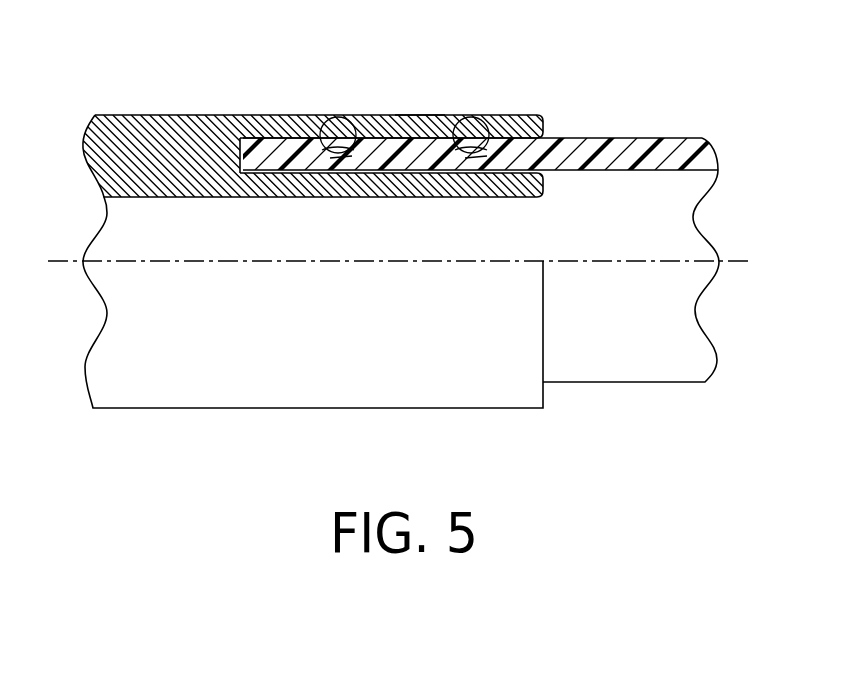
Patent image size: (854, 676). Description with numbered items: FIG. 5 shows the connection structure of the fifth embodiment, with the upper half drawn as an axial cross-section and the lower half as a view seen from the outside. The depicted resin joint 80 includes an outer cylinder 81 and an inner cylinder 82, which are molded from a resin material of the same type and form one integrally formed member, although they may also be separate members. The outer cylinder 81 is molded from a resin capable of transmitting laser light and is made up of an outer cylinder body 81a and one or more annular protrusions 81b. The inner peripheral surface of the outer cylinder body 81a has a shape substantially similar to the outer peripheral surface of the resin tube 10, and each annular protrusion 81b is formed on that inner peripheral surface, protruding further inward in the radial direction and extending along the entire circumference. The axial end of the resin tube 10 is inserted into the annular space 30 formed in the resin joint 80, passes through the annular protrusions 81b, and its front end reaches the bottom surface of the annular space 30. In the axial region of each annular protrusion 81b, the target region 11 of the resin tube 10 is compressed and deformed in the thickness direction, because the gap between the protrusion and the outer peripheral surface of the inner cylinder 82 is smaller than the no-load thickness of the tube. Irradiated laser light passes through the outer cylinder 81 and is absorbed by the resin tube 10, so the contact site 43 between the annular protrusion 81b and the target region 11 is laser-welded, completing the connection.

The resin tube 10 is at (668, 136).
The target region 11 is at (338, 150).
The annular space 30 is at (268, 146).
The contact site 43 is at (354, 118).
The resin joint 80 is at (158, 115).
The outer cylinder 81 is at (522, 116).
The outer cylinder body 81a is at (420, 114).
The annular protrusion 81b is at (335, 130).
The inner cylinder 82 is at (528, 195).